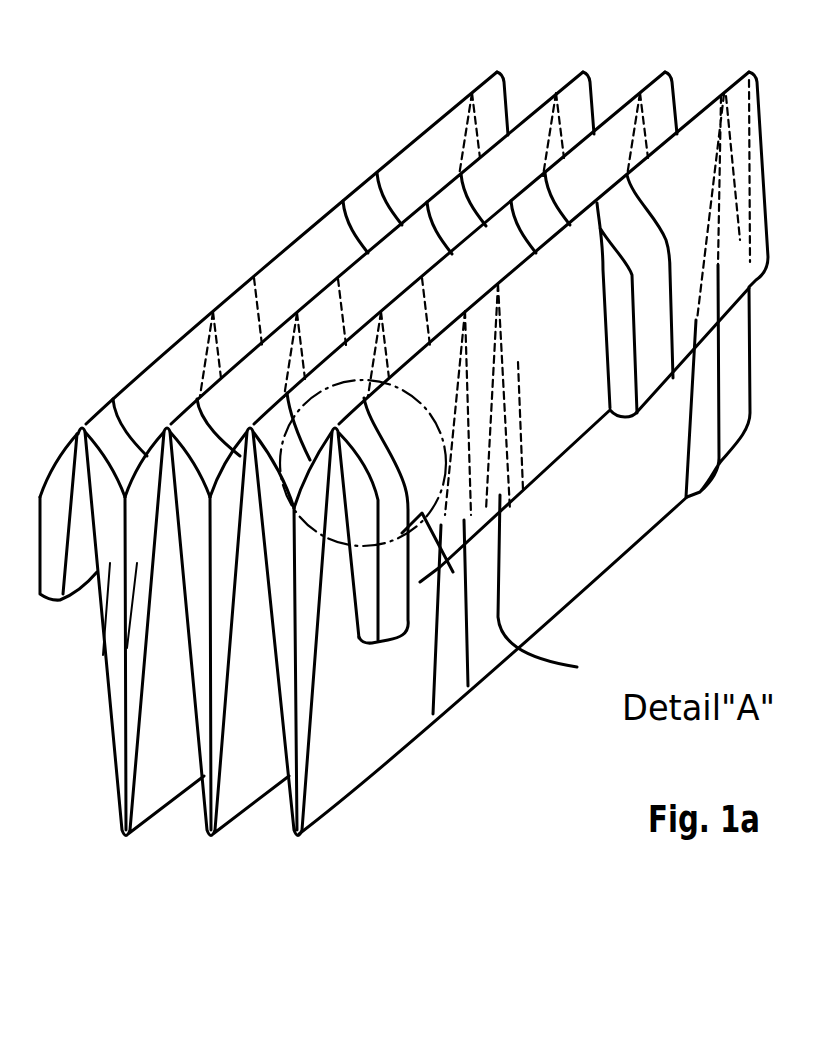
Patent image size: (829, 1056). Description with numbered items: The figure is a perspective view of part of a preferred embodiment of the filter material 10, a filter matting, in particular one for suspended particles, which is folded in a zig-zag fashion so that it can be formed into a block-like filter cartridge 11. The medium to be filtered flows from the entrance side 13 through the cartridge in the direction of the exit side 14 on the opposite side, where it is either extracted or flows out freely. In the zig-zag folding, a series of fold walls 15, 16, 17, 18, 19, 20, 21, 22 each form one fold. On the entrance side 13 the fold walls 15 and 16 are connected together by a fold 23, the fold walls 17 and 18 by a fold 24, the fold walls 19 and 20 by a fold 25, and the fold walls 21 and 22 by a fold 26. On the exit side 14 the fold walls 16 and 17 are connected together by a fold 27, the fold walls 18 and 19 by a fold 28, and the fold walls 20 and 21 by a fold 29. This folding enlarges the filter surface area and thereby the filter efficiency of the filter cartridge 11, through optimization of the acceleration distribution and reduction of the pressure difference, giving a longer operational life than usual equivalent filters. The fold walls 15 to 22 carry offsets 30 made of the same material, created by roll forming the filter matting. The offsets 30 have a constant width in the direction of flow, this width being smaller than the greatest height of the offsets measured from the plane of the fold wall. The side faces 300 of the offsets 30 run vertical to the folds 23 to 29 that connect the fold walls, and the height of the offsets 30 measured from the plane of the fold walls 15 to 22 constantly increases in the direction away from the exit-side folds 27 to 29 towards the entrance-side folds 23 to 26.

The filter material 10 is at (558, 420).
The filter cartridge 11 is at (152, 150).
The entrance side 13 is at (397, 95).
The exit side 14 is at (177, 905).
The fold wall 15 is at (95, 568).
The fold wall 16 is at (135, 398).
The fold wall 17 is at (163, 740).
The fold wall 18 is at (353, 298).
The fold wall 19 is at (250, 733).
The fold wall 20 is at (440, 277).
The fold wall 21 is at (345, 710).
The fold wall 22 is at (547, 277).
The fold 23 is at (497, 72).
The fold 24 is at (583, 72).
The fold 25 is at (665, 72).
The fold 26 is at (749, 72).
The fold 27 is at (129, 838).
The fold 28 is at (212, 838).
The fold 29 is at (299, 838).
The offsets 30 is at (650, 355).
The side faces 300 is at (112, 655).